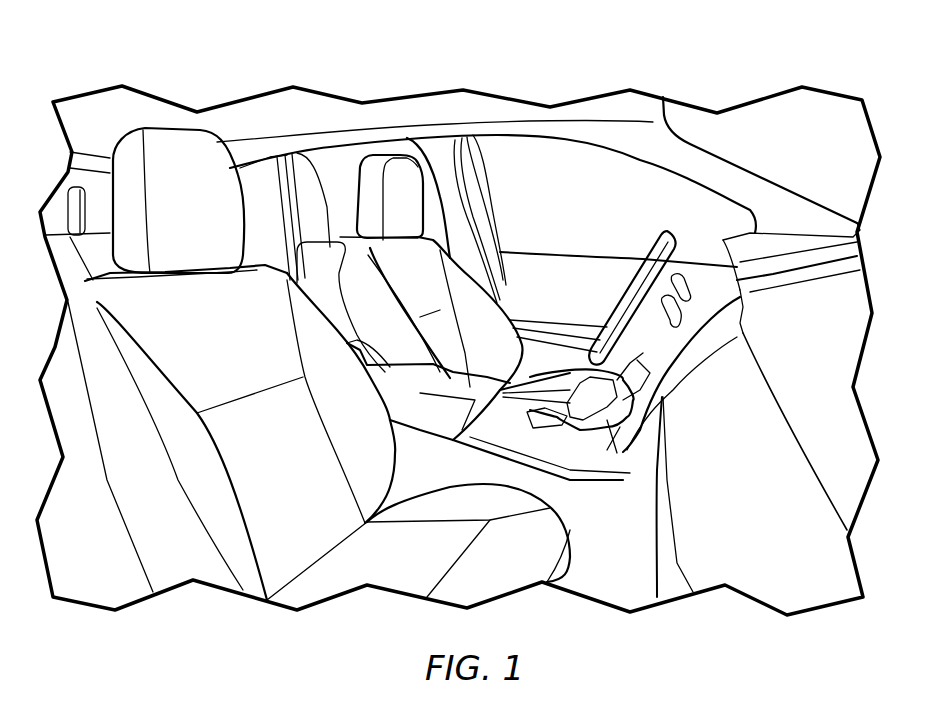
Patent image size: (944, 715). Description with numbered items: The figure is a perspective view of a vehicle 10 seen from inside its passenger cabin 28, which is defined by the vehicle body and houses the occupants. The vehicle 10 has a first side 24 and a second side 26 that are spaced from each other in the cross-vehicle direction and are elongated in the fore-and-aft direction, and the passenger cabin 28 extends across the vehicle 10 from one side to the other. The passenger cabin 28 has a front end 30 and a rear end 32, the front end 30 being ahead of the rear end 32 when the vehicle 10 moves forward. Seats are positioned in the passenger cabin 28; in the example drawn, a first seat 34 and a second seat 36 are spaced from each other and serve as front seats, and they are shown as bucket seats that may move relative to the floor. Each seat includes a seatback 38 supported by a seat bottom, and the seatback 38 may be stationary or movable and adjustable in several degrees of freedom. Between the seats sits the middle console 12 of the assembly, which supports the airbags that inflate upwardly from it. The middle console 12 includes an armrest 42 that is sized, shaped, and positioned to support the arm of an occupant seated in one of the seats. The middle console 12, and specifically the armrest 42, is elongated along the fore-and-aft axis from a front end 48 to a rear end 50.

The vehicle 10 is at (624, 54).
The middle console 12 is at (497, 305).
The first side 24 is at (606, 187).
The second side 26 is at (793, 582).
The passenger cabin 28 is at (662, 196).
The front end 30 is at (836, 186).
The rear end 32 is at (55, 220).
The first seat 34 is at (470, 387).
The second seat 36 is at (120, 520).
The seatback 38 is at (420, 270).
The armrest 42 is at (408, 377).
The front end 48 is at (520, 388).
The rear end 50 is at (340, 335).